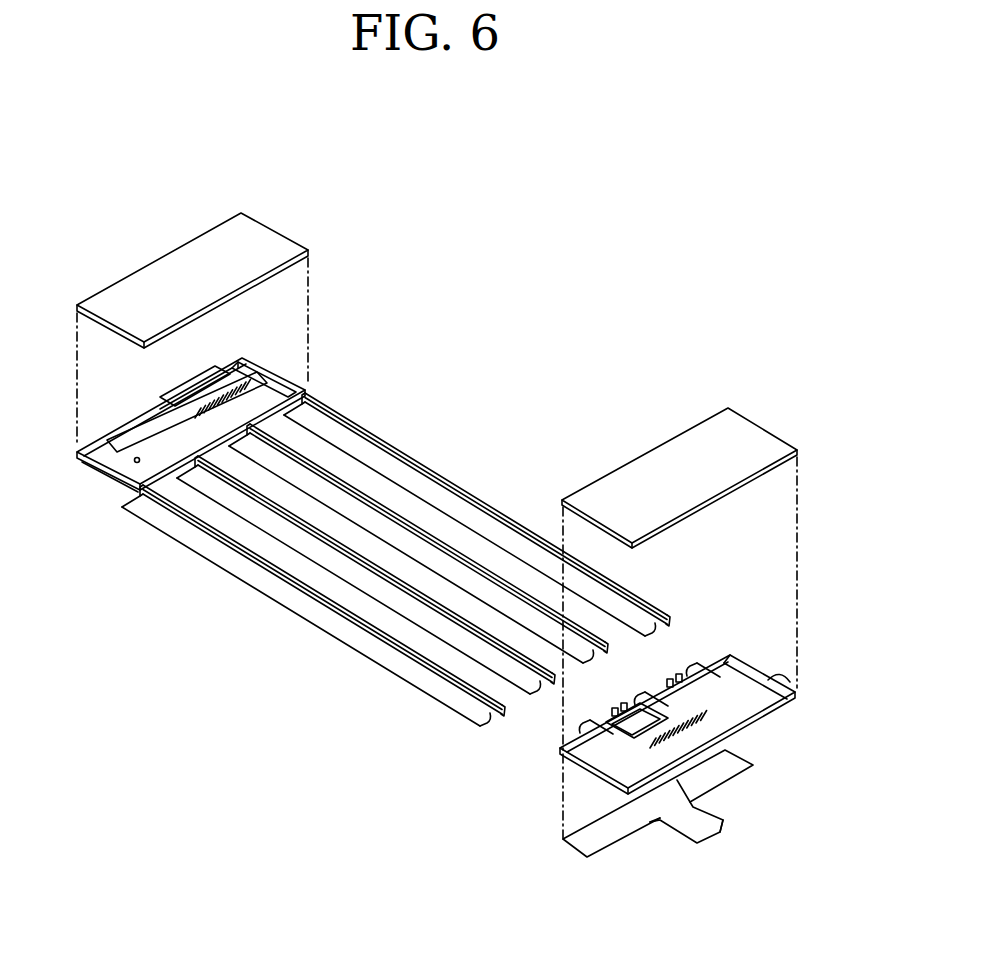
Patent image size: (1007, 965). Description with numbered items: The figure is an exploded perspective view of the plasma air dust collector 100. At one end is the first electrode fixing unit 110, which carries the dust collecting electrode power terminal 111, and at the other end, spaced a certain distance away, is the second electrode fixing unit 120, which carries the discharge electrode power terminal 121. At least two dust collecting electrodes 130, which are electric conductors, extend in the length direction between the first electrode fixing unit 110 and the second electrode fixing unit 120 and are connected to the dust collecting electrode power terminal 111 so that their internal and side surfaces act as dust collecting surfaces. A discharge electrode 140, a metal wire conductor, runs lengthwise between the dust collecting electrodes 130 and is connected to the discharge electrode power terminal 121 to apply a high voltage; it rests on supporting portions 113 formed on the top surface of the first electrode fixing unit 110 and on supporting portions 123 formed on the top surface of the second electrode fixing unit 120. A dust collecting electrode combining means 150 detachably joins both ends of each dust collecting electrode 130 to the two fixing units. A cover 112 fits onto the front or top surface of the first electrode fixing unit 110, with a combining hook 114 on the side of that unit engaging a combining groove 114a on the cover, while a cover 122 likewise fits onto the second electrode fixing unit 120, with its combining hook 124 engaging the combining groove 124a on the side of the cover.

The plasma air dust collector 100 is at (409, 190).
The first electrode fixing unit 110 is at (602, 786).
The dust collecting electrode power terminal 111 is at (717, 827).
The cover 112 is at (677, 448).
The supporting portions 113 is at (723, 687).
The combining hook 114 is at (783, 703).
The combining groove 114a is at (600, 525).
The second electrode fixing unit 120 is at (97, 486).
The discharge electrode power terminal 121 is at (97, 461).
The cover 122 is at (192, 252).
The supporting portions 123 is at (263, 371).
The combining hook 124 is at (265, 372).
The combining groove 124a is at (115, 327).
The dust collecting electrodes 130 is at (433, 602).
The discharge electrode 140 is at (347, 578).
The dust collecting electrode combining means 150 is at (525, 727).